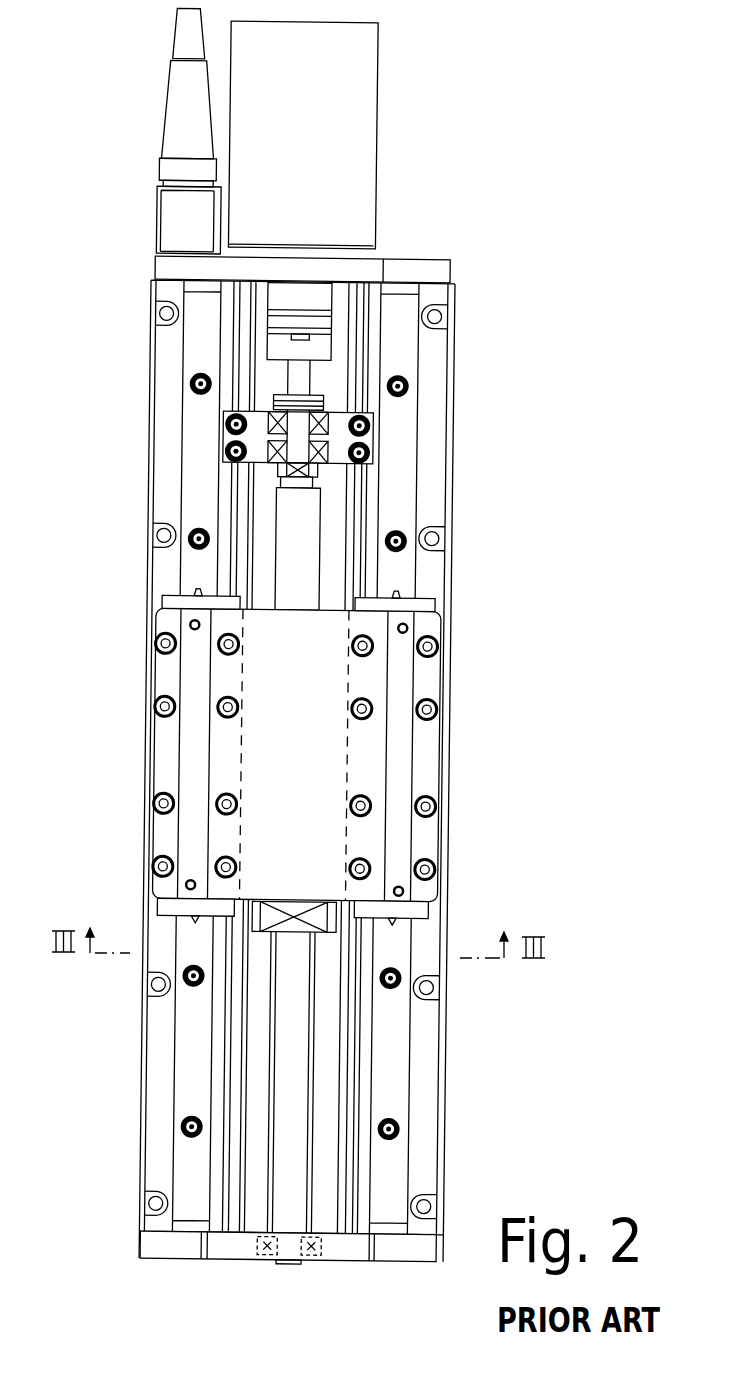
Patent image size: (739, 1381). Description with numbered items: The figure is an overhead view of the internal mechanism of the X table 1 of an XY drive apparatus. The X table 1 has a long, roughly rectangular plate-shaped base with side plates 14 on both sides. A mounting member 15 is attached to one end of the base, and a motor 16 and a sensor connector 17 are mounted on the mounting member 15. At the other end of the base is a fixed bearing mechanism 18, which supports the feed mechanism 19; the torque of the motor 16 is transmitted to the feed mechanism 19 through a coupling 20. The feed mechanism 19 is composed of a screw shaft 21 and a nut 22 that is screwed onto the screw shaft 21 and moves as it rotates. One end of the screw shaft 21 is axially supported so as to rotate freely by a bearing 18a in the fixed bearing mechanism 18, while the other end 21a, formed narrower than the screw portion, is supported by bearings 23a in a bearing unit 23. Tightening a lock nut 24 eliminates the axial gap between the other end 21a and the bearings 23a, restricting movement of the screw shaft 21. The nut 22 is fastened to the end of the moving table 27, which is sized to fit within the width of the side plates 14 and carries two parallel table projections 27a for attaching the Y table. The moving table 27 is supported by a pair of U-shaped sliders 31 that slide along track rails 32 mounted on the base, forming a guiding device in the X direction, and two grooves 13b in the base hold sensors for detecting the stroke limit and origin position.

The X table 1 is at (522, 110).
The grooves 13b is at (228, 1082).
The side plates 14 is at (159, 412).
The mounting member 15 is at (371, 269).
The motor 16 is at (362, 130).
The sensor connector 17 is at (176, 117).
The fixed bearing mechanism 18 is at (351, 1250).
The bearing 18a is at (275, 1262).
The feed mechanism 19 is at (270, 543).
The coupling 20 is at (327, 301).
The screw shaft 21 is at (292, 570).
The other end of screw shaft 21a is at (222, 440).
The nut 22 is at (335, 905).
The bearing unit 23 is at (383, 435).
The bearings 23a is at (345, 413).
The lock nut 24 is at (288, 397).
The moving table 27 is at (450, 684).
The table projections 27a is at (191, 728).
The sliders 31 is at (165, 908).
The track rails 32 is at (191, 494).